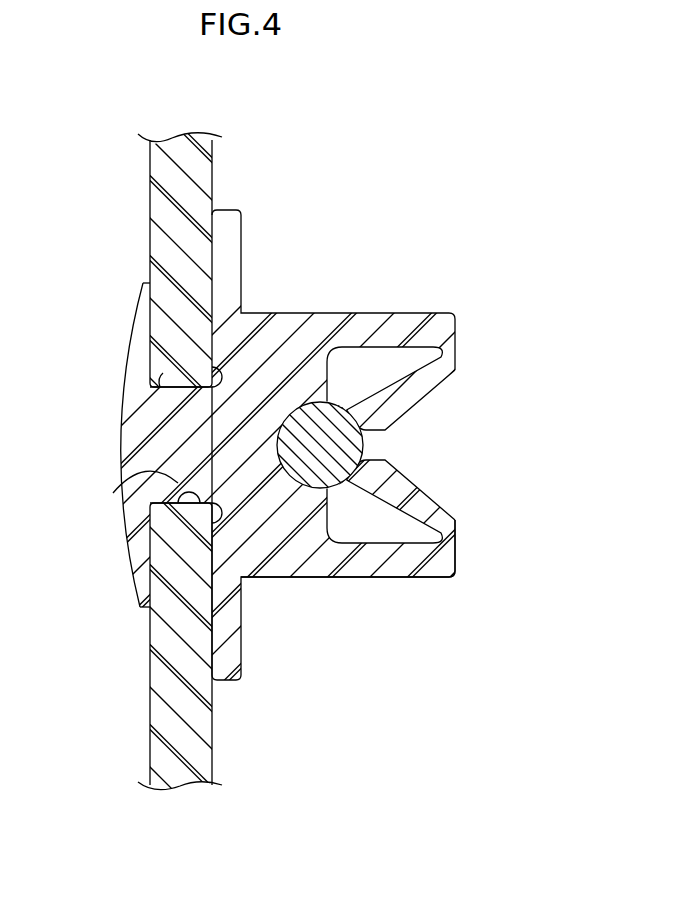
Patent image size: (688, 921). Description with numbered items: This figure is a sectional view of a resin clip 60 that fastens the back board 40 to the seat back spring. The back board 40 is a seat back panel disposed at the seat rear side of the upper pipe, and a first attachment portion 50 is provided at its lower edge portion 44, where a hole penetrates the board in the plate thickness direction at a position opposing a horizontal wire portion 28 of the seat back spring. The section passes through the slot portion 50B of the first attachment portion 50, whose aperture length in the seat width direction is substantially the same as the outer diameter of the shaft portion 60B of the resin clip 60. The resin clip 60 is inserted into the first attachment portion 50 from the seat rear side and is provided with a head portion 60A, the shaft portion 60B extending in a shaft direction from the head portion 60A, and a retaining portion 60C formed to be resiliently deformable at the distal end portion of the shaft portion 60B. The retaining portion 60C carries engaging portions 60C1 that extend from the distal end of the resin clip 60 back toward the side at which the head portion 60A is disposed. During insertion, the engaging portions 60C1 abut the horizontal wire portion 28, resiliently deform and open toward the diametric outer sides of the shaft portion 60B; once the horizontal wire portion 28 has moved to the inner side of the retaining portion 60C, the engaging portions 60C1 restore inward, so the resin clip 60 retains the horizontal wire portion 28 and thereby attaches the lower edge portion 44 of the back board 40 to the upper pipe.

The back board 40 is at (181, 268).
The lower edge portion 44 is at (157, 240).
The resin clip 60 is at (344, 313).
The head portion 60A is at (131, 414).
The shaft portion 60B is at (180, 453).
The retaining portion 60C is at (396, 571).
The engaging portions 60C1 is at (420, 505).
The horizontal wire portions 28 is at (356, 436).
The slot portion 50B is at (160, 553).
The first attachment portion 50 is at (131, 657).